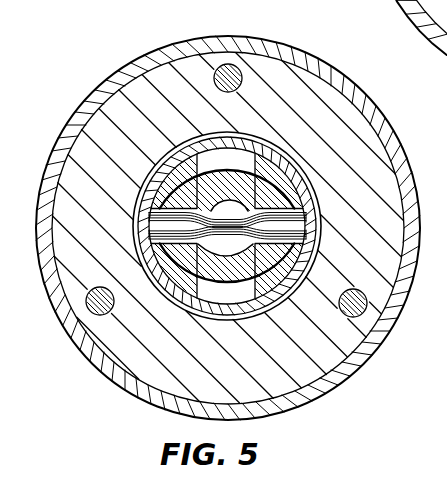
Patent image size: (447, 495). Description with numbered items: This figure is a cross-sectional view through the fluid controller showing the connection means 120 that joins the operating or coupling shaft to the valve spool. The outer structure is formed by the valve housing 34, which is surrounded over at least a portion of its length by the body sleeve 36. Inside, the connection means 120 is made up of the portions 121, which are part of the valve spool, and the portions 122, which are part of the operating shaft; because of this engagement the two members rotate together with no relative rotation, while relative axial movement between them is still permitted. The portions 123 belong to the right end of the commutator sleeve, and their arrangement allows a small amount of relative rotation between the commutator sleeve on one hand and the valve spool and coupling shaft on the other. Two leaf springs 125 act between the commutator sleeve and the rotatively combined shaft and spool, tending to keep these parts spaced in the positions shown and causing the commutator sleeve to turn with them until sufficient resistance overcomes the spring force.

The valve housing 34 is at (299, 72).
The body sleeve 36 is at (183, 40).
The connection means 120 is at (318, 158).
The portions of the valve spool 121 is at (243, 228).
The portions of the operating shaft 122 is at (197, 174).
The portions of the commutator sleeve 123 is at (231, 156).
The leaf springs 125 is at (165, 226).